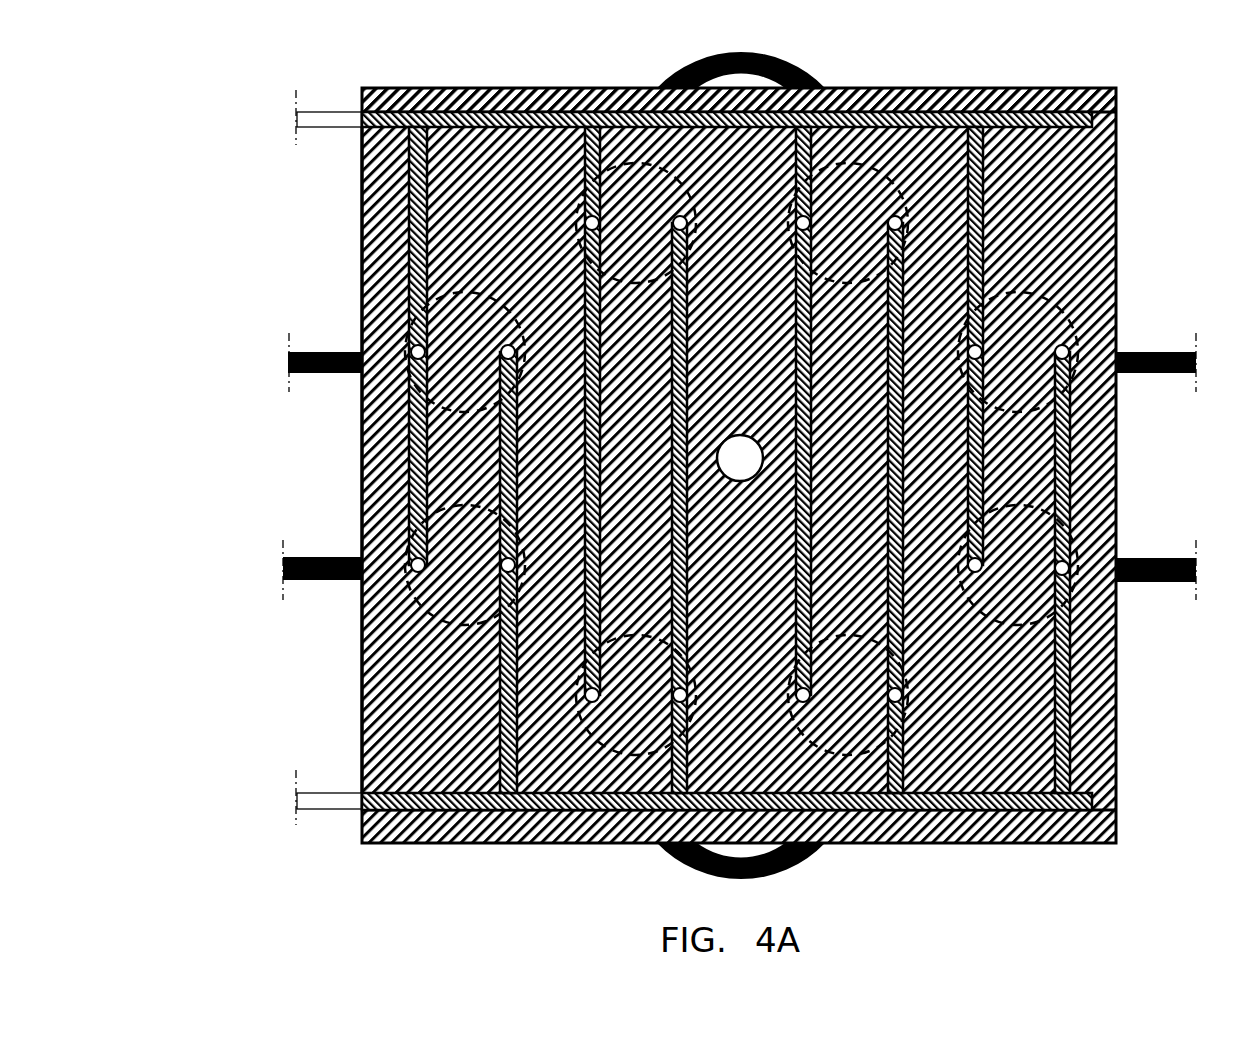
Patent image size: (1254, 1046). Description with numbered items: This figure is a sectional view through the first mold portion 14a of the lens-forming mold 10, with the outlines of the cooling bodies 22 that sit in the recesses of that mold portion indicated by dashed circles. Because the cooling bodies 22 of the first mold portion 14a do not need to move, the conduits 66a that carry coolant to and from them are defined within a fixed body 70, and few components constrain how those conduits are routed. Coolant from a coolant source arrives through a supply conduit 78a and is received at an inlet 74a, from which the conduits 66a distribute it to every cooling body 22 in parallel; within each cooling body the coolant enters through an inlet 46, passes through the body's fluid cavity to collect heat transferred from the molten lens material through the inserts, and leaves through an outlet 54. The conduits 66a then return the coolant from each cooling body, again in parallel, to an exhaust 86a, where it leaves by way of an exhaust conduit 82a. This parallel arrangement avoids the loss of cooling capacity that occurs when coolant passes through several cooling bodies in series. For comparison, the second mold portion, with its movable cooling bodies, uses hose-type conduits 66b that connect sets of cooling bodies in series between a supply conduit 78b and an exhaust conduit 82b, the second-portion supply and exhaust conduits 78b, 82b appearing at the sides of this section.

The mold 10 is at (136, 82).
The first mold portion 14a is at (1113, 115).
The cooling bodies 22 is at (362, 408).
The inlet 46 is at (415, 350).
The outlet 54 is at (505, 350).
The conduits 66a is at (406, 518).
The conduits 66b is at (805, 67).
The fixed body 70 is at (1105, 182).
The inlet 74a is at (362, 127).
The supply conduit 78a is at (313, 111).
The supply conduit 78b is at (315, 373).
The exhaust conduit 82a is at (320, 810).
The exhaust conduit 82b is at (1150, 352).
The exhaust 86a is at (362, 792).